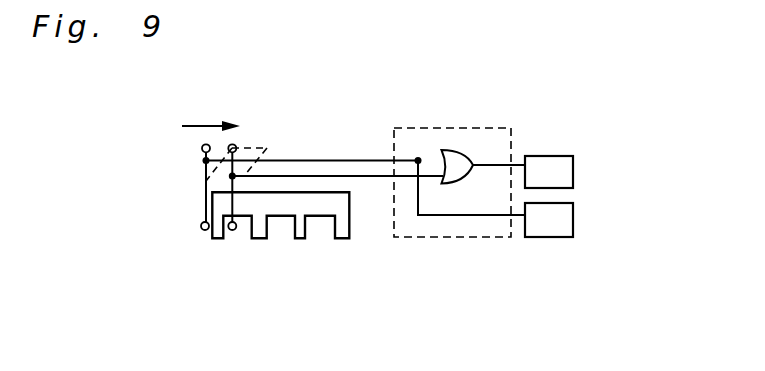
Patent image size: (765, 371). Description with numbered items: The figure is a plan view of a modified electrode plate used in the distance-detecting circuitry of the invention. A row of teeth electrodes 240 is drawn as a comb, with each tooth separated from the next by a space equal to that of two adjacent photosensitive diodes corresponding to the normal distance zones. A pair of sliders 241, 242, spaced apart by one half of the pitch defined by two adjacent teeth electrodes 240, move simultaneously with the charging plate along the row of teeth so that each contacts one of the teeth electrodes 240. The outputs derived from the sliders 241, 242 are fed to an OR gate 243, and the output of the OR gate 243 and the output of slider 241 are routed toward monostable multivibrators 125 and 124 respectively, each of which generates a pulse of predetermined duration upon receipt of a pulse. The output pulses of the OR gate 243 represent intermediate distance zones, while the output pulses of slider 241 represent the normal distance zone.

The monostable multivibrator 124 is at (573, 216).
The monostable multivibrator 125 is at (573, 168).
The teeth electrodes 240 is at (217, 238).
The slider 241 is at (202, 229).
The slider 242 is at (235, 230).
The OR gate 243 is at (453, 158).